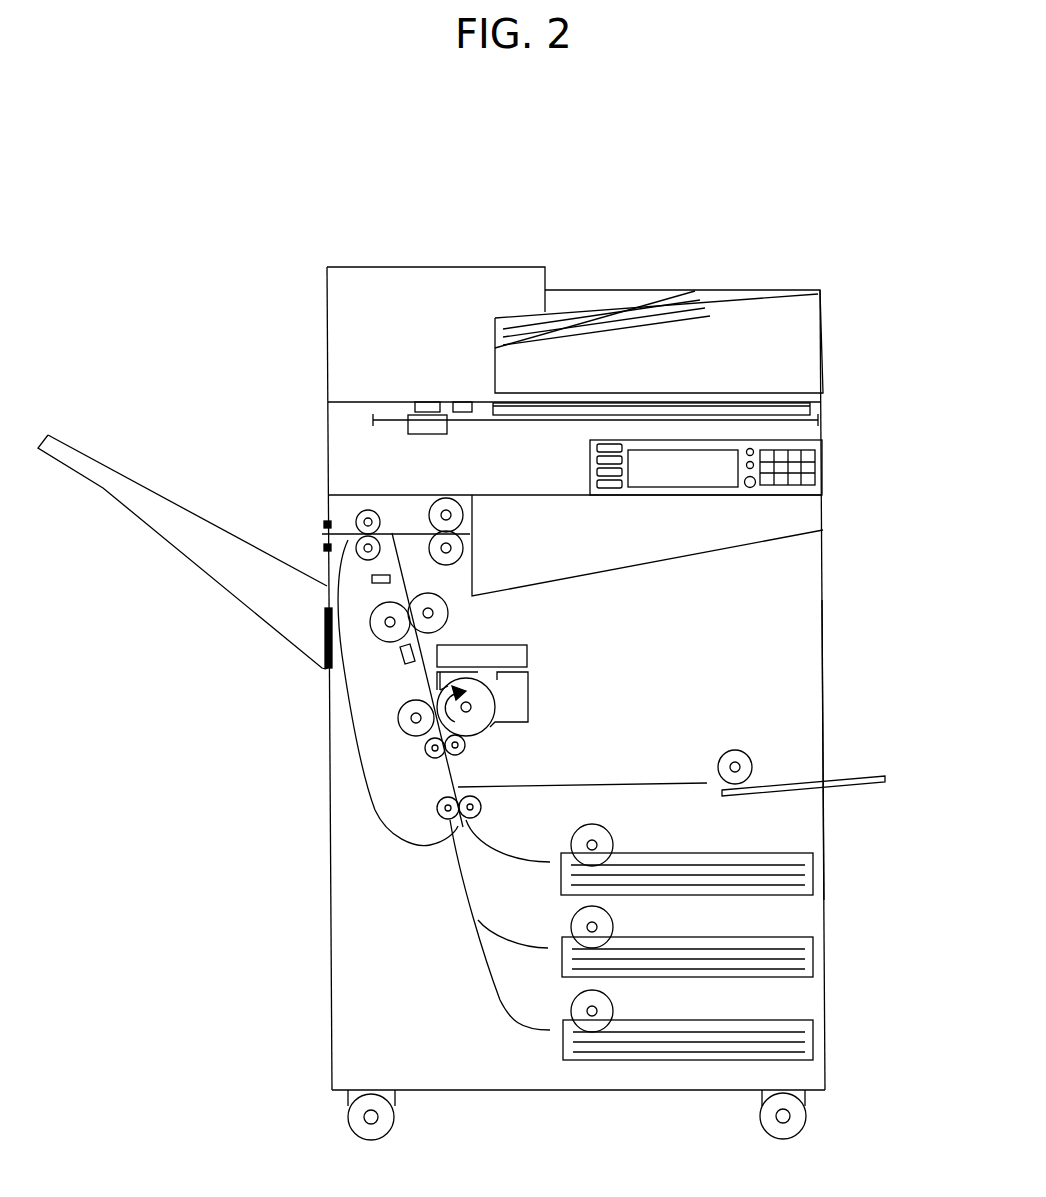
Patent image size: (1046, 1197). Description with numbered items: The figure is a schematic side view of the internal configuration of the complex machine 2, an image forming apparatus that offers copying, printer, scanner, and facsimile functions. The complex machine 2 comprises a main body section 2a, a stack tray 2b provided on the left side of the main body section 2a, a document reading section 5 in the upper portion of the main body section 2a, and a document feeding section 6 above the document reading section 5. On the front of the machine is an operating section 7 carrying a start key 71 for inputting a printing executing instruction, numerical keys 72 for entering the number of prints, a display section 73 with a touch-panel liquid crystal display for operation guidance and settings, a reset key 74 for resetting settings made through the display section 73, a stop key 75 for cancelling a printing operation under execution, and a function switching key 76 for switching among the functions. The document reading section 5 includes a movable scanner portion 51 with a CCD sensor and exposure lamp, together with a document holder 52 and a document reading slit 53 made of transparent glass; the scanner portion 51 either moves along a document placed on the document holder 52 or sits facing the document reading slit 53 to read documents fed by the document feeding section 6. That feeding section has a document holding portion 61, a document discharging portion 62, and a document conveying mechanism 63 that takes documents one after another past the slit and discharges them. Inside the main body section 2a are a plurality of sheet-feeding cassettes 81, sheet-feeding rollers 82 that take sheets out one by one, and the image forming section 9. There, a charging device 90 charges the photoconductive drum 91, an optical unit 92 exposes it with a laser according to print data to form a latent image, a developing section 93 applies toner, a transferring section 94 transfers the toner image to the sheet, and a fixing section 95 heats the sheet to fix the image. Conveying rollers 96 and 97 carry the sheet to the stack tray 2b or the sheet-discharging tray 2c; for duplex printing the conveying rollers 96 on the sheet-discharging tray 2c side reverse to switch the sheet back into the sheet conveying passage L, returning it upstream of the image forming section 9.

The complex machine 2 is at (126, 268).
The main body section 2a is at (805, 691).
The stack tray 2b is at (230, 604).
The sheet-discharging tray 2c is at (645, 567).
The document reading section 5 is at (352, 434).
The document feeding section 6 is at (612, 288).
The operating section 7 is at (841, 469).
The image forming section 9 is at (380, 702).
The sheet conveying passage L is at (338, 692).
The scanner portion 51 is at (428, 436).
The document holder 52 is at (810, 407).
The document reading slit 53 is at (420, 404).
The document holding portion 61 is at (727, 298).
The document discharging portion 62 is at (747, 393).
The document conveying mechanism 63 is at (422, 352).
The start key 71 is at (748, 493).
The numerical keys 72 is at (770, 487).
The display section 73 is at (657, 472).
The reset key 74 is at (752, 446).
The stop key 75 is at (752, 460).
The function switching key 76 is at (596, 468).
The sheet-feeding cassettes 81 is at (813, 880).
The sheet-feeding rollers 82 is at (613, 845).
The charging device 90 is at (455, 670).
The photoconductive drum 91 is at (484, 729).
The optical unit 92 is at (530, 655).
The developing section 93 is at (530, 700).
The transferring section 94 is at (407, 733).
The fixing section 95 is at (390, 638).
The conveying rollers 96 is at (430, 507).
The conveying rollers 97 is at (356, 517).